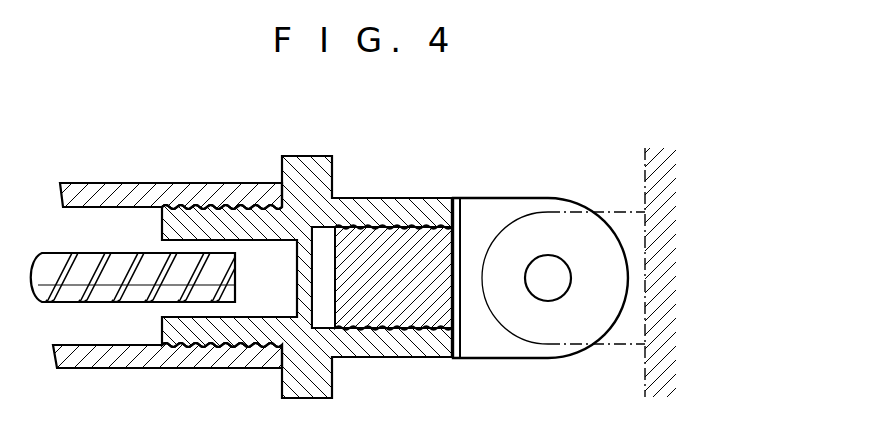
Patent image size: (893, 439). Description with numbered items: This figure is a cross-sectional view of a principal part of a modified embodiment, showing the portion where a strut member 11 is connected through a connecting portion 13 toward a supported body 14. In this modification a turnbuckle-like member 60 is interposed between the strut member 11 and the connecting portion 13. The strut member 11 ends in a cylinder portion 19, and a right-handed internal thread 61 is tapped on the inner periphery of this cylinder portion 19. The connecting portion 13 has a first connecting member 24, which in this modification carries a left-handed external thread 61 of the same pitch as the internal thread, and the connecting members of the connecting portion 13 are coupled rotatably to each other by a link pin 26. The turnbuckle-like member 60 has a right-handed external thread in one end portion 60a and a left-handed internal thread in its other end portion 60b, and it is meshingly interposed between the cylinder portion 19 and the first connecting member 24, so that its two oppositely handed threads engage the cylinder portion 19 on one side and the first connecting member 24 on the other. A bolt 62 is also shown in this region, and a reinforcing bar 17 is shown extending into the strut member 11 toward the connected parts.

The strut member 11 is at (167, 238).
The connecting portion 13 is at (549, 264).
The supported body 14 is at (645, 365).
The reinforcing bar 17 is at (63, 309).
The cylinder portion 19 is at (127, 184).
The first connecting member 24 is at (480, 338).
The link pin 26 is at (557, 268).
The turnbuckle-like member 60 is at (307, 256).
The one end portion 60a is at (217, 333).
The coupler body 60b is at (388, 211).
The thread 61 is at (215, 207).
The bolt 62 is at (398, 330).